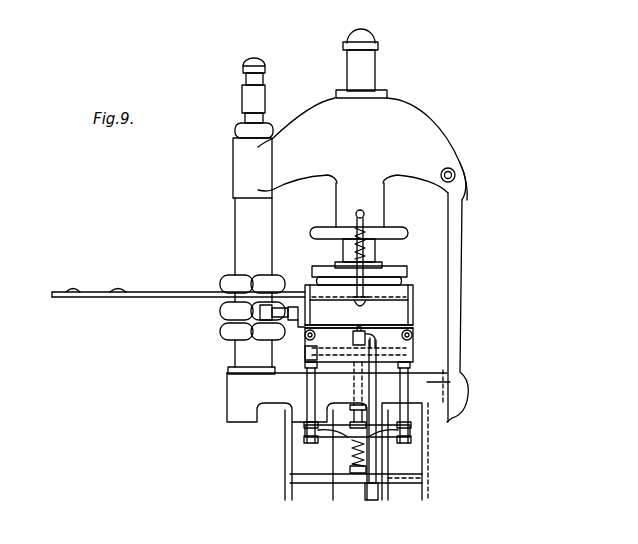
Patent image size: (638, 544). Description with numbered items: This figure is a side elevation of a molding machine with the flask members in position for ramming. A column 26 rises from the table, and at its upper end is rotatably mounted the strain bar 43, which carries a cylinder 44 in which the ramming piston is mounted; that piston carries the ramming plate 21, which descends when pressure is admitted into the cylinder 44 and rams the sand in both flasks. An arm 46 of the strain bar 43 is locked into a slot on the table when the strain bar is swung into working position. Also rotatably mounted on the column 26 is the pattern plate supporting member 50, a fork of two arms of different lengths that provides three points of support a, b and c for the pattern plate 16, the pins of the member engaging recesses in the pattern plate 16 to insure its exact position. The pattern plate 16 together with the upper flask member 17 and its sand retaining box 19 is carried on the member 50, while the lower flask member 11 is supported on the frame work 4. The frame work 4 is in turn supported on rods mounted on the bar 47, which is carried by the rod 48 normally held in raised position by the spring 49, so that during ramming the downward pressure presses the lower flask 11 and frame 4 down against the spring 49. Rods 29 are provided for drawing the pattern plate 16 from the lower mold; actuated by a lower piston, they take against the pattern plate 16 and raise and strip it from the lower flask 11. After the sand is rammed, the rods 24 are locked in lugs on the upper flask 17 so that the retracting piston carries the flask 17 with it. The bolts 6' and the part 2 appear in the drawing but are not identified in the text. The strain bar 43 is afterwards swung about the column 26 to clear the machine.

The strain bar 43 is at (362, 149).
The cylinder 44 is at (332, 102).
The rods 24 is at (353, 294).
The ramming plate 21 is at (397, 297).
The sand retaining box 19 is at (413, 296).
The pattern plate 16 is at (329, 315).
The upper flask member 17 is at (398, 315).
The frame work 4 is at (393, 358).
The lower flask member 11 is at (405, 332).
The column 26 is at (247, 223).
The point of support c is at (226, 285).
The pattern plate supporting member 50 is at (134, 297).
The point of support a is at (120, 289).
The point of support b is at (73, 289).
The bed 2 is at (317, 363).
The arm 46 is at (452, 298).
The bolt 6' is at (355, 402).
The rod 48 is at (353, 389).
The bar 47 is at (327, 436).
The spring 49 is at (353, 453).
The rods 29 is at (379, 463).